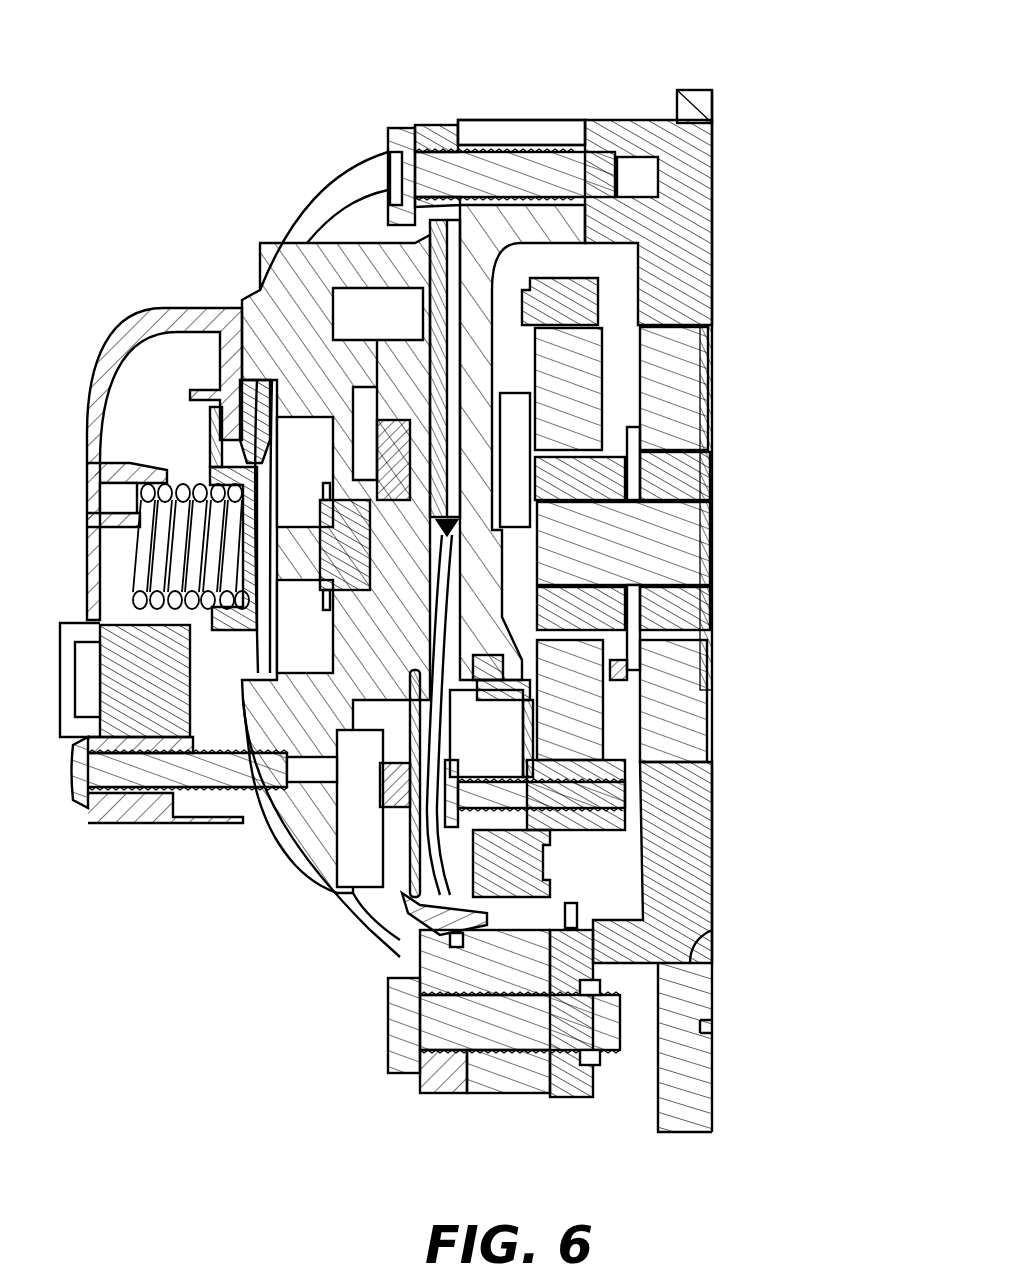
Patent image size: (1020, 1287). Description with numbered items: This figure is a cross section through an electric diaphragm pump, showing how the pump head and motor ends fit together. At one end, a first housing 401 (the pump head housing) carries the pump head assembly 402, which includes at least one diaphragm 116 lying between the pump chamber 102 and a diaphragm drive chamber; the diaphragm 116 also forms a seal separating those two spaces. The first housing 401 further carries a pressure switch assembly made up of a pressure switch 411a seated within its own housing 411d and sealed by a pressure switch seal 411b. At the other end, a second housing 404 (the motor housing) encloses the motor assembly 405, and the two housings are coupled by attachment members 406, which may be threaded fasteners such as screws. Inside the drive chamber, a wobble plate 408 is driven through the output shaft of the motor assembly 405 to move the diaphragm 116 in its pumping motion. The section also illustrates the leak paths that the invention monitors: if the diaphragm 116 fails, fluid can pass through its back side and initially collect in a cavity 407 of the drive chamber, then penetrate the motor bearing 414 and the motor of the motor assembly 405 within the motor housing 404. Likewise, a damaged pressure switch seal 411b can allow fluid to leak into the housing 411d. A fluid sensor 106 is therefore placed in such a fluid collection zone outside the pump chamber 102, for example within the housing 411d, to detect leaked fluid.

The pump chamber 102 is at (395, 960).
The fluid sensor 106 is at (578, 918).
The diaphragm 116 is at (423, 850).
The first housing 401 is at (530, 122).
The pump head assembly 402 is at (511, 74).
The second housing 404 is at (647, 115).
The motor assembly 405 is at (713, 467).
The attachment members 406 is at (402, 128).
The cavity 407 is at (588, 870).
The wobble plate 408 is at (603, 295).
The pressure switch 411a is at (142, 710).
The pressure switch seal 411b is at (283, 667).
The housing 411d is at (203, 703).
The motor bearing 414 is at (680, 673).